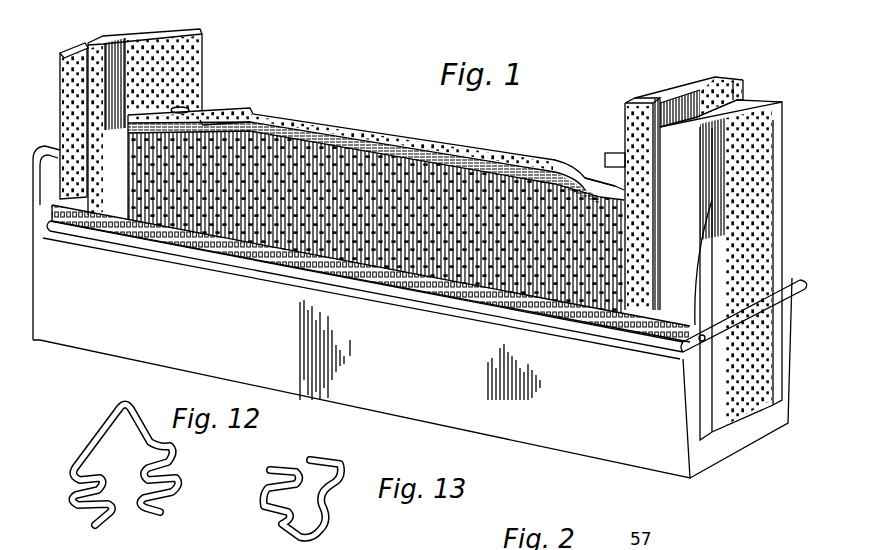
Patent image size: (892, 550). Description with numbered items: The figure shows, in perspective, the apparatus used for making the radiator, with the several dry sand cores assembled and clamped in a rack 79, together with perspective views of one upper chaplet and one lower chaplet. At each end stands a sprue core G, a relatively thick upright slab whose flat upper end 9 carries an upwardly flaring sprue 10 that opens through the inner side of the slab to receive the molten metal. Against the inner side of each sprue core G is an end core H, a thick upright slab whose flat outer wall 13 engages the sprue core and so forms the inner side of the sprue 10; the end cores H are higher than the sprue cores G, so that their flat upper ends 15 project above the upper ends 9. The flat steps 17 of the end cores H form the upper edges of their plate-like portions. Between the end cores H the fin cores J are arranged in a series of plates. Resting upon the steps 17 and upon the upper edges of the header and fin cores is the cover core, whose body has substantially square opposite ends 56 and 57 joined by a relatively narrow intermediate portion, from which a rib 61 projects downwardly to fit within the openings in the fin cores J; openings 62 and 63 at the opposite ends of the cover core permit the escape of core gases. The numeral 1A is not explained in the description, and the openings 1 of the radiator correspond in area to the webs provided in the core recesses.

The openings 1 is at (606, 300).
The end plate 1A is at (190, 47).
The upper end 9 is at (759, 100).
The sprue 10 is at (692, 117).
The flat outer wall 13 is at (722, 82).
The upper end 15 is at (128, 40).
The steps 17 is at (118, 128).
The end of cover core body 56 is at (232, 112).
The end of cover core body 57 is at (573, 167).
The rib 61 is at (343, 128).
The opening 62 is at (188, 108).
The opening 63 is at (624, 163).
The rack 79 is at (77, 337).
The sprue cores G is at (76, 73).
The end cores H is at (196, 68).
The fin cores J is at (415, 167).